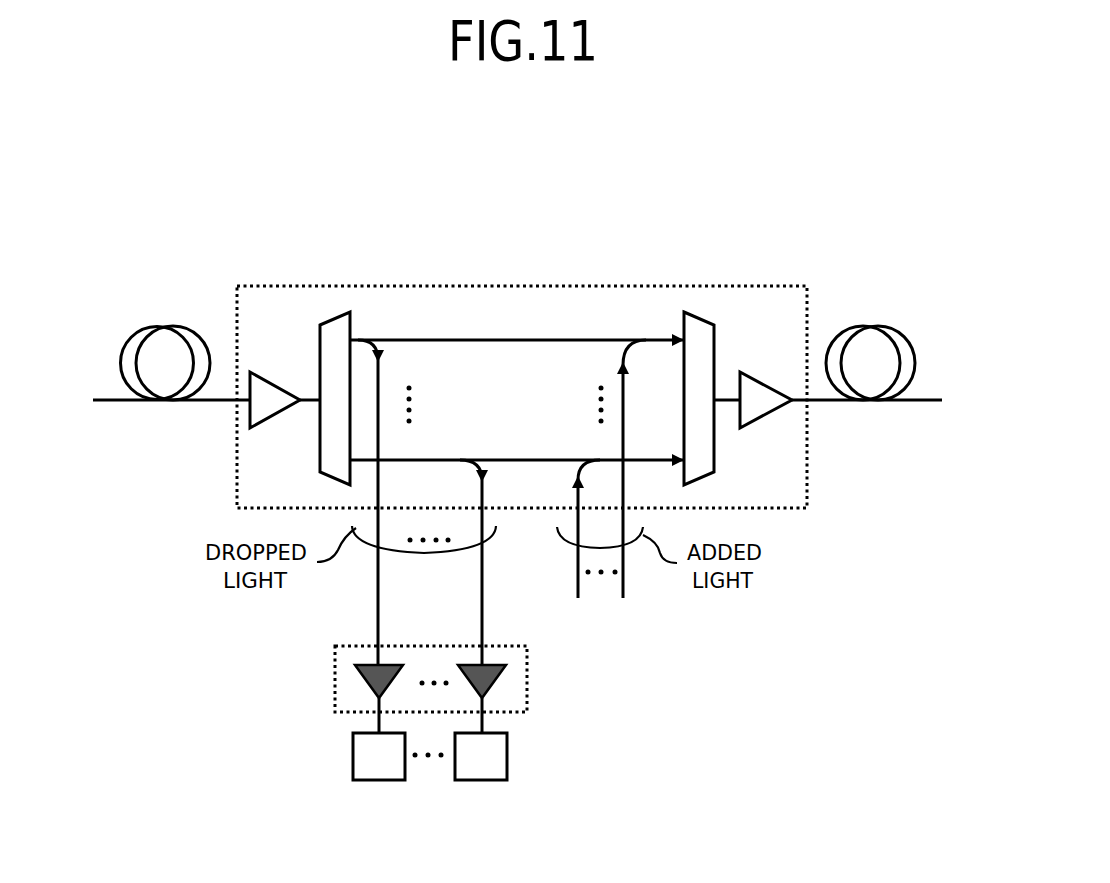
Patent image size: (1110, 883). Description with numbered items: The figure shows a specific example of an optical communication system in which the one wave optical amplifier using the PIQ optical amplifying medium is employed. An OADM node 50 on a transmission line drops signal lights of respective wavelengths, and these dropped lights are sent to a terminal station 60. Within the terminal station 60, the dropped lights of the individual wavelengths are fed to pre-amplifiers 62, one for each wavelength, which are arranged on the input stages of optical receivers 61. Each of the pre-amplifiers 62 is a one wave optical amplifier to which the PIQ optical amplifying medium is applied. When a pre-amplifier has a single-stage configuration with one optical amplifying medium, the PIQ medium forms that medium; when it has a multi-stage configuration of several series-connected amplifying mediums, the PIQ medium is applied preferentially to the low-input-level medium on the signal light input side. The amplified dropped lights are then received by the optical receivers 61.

The OADM node 50 is at (517, 448).
The terminal station 60 is at (295, 711).
The optical receivers (OR) 61 is at (429, 792).
The pre-amplifiers 62 is at (430, 670).